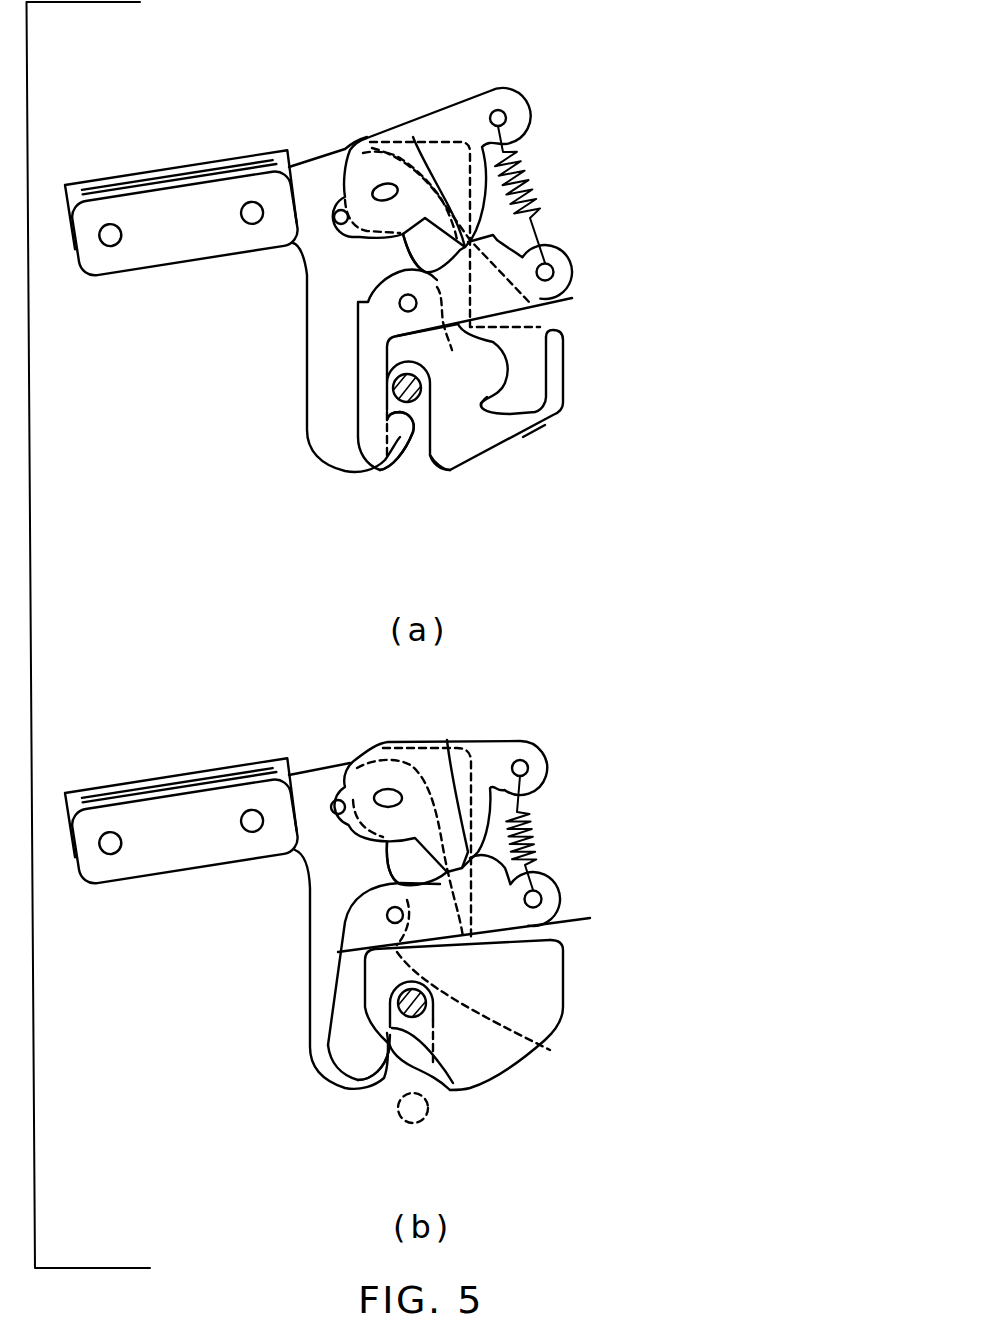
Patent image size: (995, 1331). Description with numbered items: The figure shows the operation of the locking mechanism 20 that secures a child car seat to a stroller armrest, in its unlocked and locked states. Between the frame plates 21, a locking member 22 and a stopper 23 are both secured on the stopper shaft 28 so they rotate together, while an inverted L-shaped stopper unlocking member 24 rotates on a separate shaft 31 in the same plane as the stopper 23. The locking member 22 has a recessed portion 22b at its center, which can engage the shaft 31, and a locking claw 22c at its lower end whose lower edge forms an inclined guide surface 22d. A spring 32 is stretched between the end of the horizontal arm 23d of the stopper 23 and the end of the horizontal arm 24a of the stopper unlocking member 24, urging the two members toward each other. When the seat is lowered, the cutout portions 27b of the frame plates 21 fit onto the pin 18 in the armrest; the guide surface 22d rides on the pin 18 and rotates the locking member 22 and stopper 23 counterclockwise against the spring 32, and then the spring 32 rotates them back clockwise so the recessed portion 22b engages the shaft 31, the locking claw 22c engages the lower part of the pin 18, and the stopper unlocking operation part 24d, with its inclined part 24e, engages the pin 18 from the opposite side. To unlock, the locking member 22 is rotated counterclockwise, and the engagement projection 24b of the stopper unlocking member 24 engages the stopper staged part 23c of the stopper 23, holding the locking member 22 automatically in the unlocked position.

The pin 18 is at (390, 398).
The locking mechanism 20 is at (690, 380).
The frame plate 21 is at (557, 393).
The locking member 22 is at (537, 362).
The recessed portion 22b is at (489, 611).
The locking claw 22c is at (497, 407).
The guide surface 22d is at (523, 437).
The stopper 23 is at (465, 112).
The stopper staged part 23c is at (440, 242).
The horizontal arm 23d is at (508, 107).
The stopper unlocking member 24 is at (572, 298).
The horizontal arm 24a is at (568, 262).
The engagement projection 24b is at (413, 137).
The stopper unlocking operation part 24d is at (398, 443).
The inclined part 24e is at (395, 414).
The cutout portion 27b is at (443, 470).
The stopper shaft 28 is at (383, 187).
The shaft 31 is at (398, 306).
The spring 32 is at (533, 178).